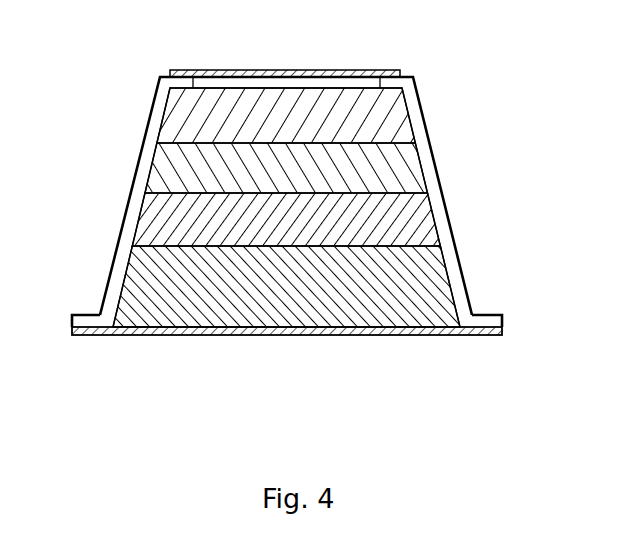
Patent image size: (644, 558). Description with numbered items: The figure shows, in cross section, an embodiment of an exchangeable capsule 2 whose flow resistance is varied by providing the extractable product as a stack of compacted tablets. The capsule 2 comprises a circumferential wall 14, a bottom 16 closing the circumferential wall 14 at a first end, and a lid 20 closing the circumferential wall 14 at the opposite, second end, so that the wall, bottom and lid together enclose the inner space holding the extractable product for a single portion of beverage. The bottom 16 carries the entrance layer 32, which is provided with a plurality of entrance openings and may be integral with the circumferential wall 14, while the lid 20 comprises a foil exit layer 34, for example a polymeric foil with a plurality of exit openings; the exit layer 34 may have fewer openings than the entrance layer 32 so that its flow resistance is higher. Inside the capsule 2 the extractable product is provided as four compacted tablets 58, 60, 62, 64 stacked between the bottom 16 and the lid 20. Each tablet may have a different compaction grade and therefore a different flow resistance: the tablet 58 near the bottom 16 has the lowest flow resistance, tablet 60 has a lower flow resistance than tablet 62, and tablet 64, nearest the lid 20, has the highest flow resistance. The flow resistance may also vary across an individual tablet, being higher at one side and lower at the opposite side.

The exchangeable capsule 2 is at (314, 198).
The circumferential wall 14 is at (437, 197).
The bottom 16 is at (396, 86).
The lid 20 is at (473, 336).
The entrance layer 32 is at (376, 70).
The exit layer 34 is at (418, 336).
The compacted tablet 58 is at (182, 108).
The compacted tablet 60 is at (172, 164).
The compacted tablet 62 is at (157, 214).
The compacted tablet 64 is at (147, 268).